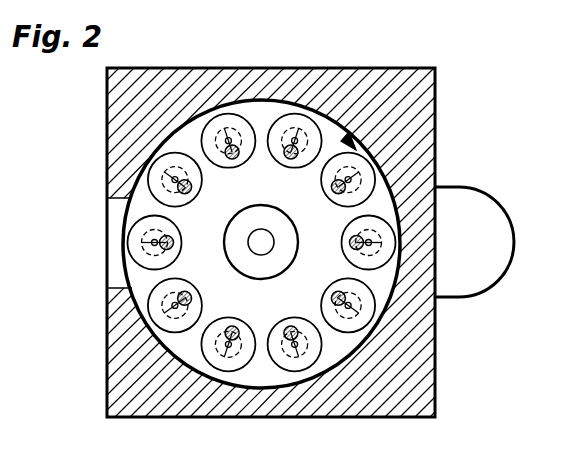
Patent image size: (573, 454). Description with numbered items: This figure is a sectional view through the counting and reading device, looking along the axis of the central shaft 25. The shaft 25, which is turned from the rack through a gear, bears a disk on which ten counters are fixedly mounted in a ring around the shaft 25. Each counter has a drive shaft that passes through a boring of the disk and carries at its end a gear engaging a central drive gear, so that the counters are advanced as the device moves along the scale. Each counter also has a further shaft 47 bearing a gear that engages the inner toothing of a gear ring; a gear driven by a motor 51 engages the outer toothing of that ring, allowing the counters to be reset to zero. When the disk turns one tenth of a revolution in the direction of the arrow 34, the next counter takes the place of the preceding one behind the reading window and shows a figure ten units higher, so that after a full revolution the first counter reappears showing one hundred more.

The shaft 25 is at (261, 236).
The arrow 34 is at (334, 136).
The shaft 47 is at (144, 236).
The motor 51 is at (462, 193).